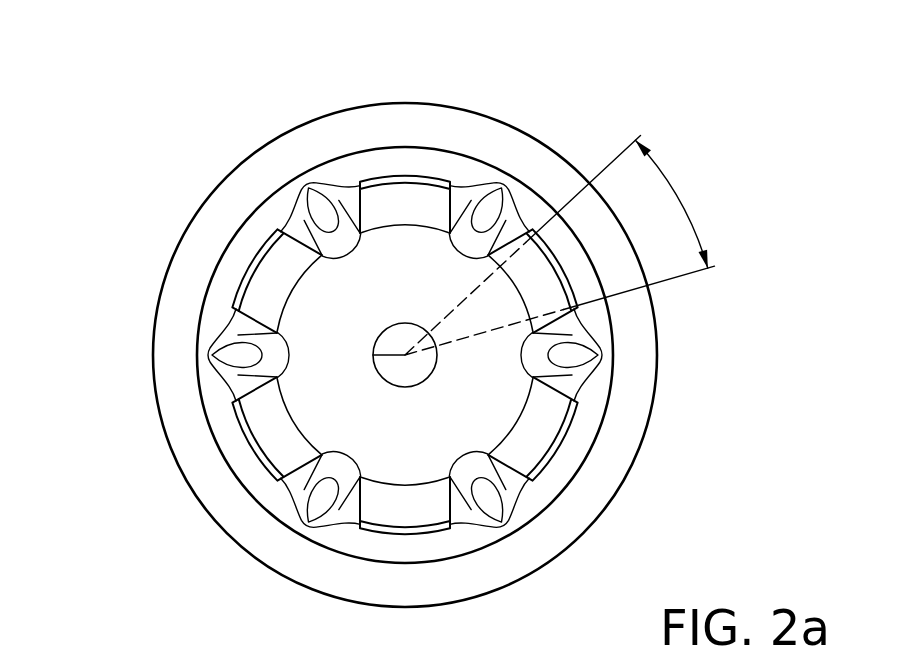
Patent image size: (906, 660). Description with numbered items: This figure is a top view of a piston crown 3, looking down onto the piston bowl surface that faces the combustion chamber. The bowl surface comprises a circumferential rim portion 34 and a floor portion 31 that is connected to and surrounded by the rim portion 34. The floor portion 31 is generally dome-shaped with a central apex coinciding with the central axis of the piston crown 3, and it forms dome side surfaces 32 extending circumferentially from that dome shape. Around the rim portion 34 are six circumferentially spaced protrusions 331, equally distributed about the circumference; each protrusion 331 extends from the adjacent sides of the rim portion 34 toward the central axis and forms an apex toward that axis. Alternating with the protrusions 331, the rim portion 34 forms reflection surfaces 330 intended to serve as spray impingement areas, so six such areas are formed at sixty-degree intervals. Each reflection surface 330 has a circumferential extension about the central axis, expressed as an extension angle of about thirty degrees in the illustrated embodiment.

The piston crown 3 is at (140, 68).
The floor portion 31 is at (373, 355).
The dome side surfaces 32 is at (337, 308).
The circumferential rim portion 34 is at (630, 397).
The reflection surfaces 330 is at (413, 200).
The protrusions 331 is at (492, 205).